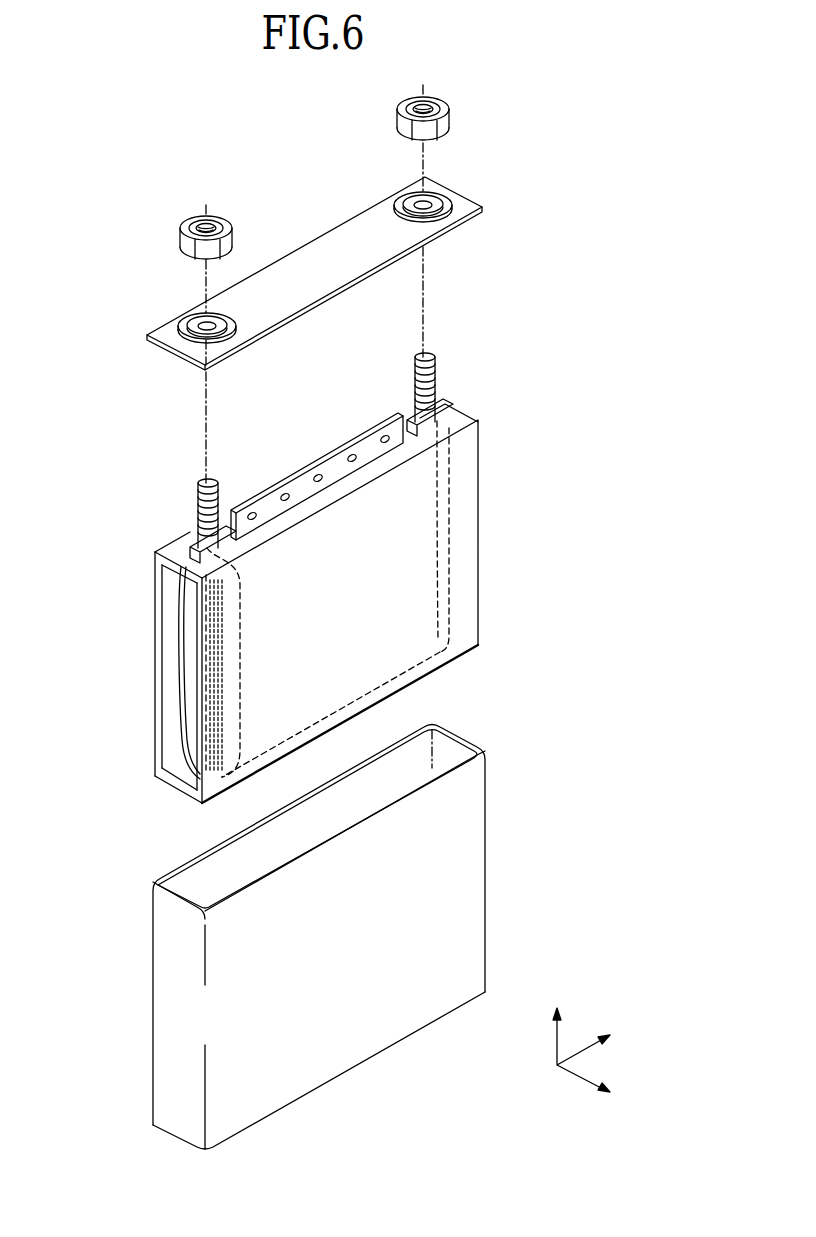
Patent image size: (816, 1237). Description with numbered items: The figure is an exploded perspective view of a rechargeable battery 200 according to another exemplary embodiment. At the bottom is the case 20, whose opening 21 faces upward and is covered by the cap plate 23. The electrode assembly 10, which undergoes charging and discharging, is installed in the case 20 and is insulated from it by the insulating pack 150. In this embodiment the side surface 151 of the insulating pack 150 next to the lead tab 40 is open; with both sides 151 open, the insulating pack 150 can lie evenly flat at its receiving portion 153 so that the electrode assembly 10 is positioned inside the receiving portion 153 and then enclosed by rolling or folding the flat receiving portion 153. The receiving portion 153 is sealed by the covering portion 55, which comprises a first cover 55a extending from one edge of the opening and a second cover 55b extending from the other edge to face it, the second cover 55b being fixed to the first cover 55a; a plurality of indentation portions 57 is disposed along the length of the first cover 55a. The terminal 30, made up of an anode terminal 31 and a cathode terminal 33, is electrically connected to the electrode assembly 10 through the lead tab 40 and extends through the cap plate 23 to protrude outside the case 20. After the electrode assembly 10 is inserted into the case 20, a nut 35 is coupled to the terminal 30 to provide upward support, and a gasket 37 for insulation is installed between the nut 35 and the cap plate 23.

The rechargeable battery 200 is at (238, 142).
The nut 35 is at (397, 124).
The gasket 37 is at (437, 191).
The cap plate 23 is at (308, 262).
The terminal 30 is at (367, 449).
The anode terminal 31 is at (214, 482).
The cathode terminal 33 is at (416, 360).
The covering portion 55 is at (494, 418).
The first cover 55a is at (441, 428).
The second cover 55b is at (381, 406).
The indentation portions 57 is at (356, 460).
The electrode assembly 10 is at (403, 552).
The lead tab 40 is at (190, 667).
The insulating pack 150 is at (315, 611).
The side surface 151 is at (156, 618).
The receiving portion 153 is at (472, 656).
The opening 21 is at (414, 776).
The case 20 is at (361, 937).